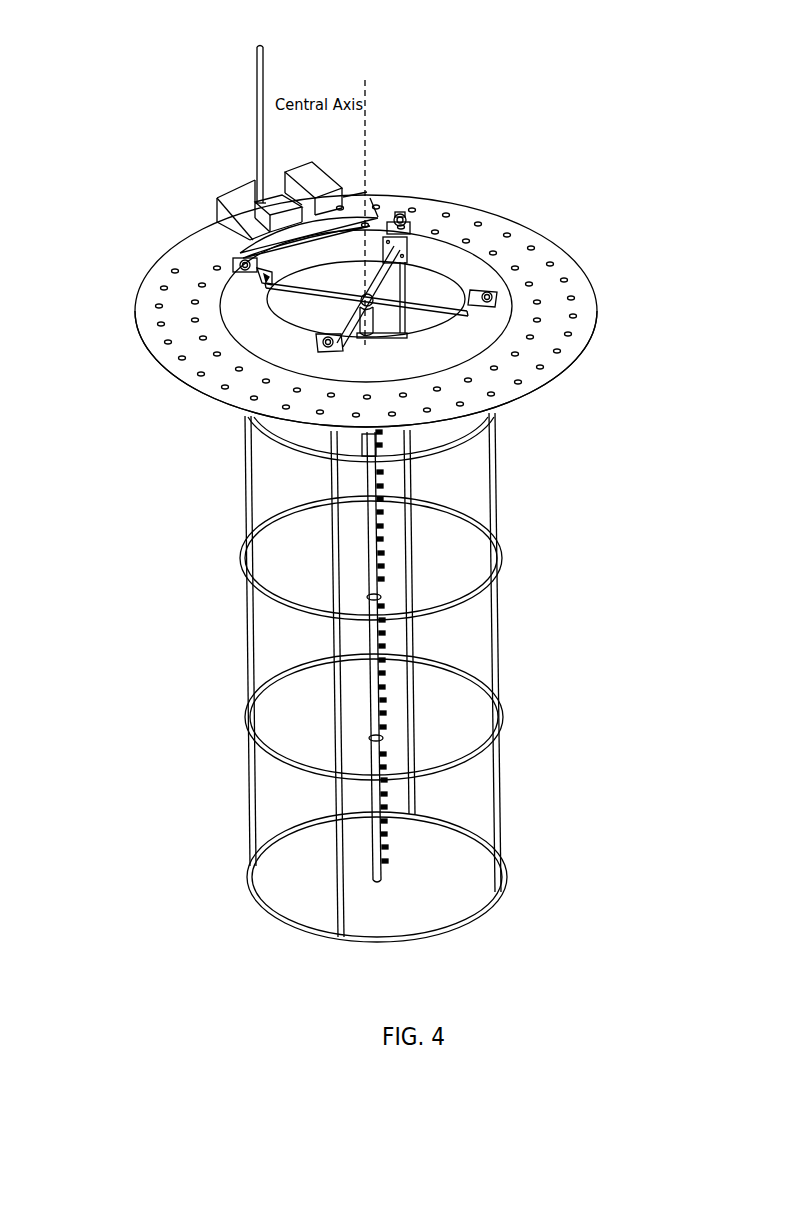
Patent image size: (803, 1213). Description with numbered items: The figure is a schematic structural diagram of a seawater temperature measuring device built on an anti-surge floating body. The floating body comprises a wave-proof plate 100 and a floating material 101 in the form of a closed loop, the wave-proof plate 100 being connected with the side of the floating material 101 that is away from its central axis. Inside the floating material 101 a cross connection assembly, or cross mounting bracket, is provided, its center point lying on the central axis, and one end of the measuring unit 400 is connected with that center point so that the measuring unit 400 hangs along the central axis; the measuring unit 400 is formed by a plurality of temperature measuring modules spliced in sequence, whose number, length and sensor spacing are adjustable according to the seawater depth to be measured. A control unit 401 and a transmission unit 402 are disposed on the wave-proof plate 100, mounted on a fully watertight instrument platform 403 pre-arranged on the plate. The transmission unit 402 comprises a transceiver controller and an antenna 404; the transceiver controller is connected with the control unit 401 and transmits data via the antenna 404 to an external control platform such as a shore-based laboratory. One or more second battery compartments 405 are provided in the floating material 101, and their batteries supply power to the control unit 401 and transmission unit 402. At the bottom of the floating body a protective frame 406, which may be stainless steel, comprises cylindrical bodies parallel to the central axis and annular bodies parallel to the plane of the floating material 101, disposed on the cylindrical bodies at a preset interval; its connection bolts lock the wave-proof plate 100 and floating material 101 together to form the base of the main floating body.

The wave-proof plate 100 is at (520, 375).
The floating material 101 is at (487, 270).
The measuring unit 400 is at (373, 715).
The control unit 401 is at (313, 181).
The transmission unit 402 is at (244, 256).
The instrument platform 403 is at (218, 224).
The antenna 404 is at (285, 171).
The second battery compartment 405 is at (320, 245).
The protective frame 406 is at (480, 590).